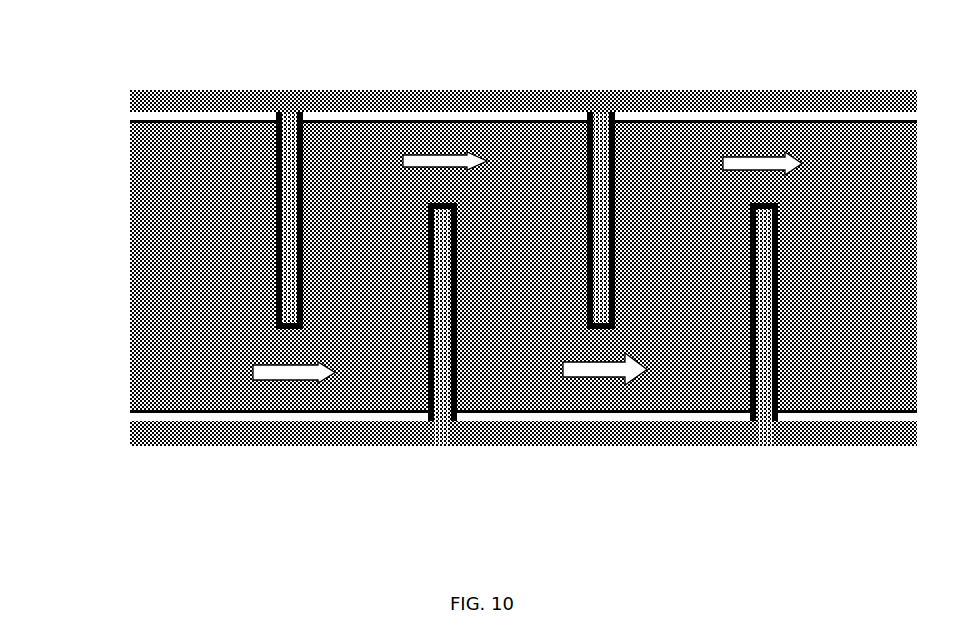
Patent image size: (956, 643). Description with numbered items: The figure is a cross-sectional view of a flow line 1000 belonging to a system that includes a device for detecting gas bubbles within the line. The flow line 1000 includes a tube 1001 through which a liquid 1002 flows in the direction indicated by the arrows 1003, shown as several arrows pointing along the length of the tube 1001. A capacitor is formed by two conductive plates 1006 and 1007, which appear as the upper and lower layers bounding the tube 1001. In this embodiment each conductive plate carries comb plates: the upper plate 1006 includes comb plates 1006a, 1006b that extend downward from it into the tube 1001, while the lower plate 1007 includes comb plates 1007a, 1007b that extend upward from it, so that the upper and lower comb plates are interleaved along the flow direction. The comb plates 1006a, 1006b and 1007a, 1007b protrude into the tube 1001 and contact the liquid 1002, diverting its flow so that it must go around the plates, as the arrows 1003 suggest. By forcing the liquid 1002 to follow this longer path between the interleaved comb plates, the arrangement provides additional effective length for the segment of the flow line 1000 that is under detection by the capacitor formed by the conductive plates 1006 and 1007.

The flow line 1000 is at (473, 276).
The tube 1001 is at (128, 123).
The liquid 1002 is at (150, 262).
The arrows 1003 is at (752, 158).
The conductive plate 1006 is at (413, 102).
The comb plate 1006a is at (305, 205).
The comb plate 1006b is at (617, 217).
The conductive plate 1007 is at (403, 423).
The comb plate 1007a is at (426, 322).
The comb plate 1007b is at (749, 323).